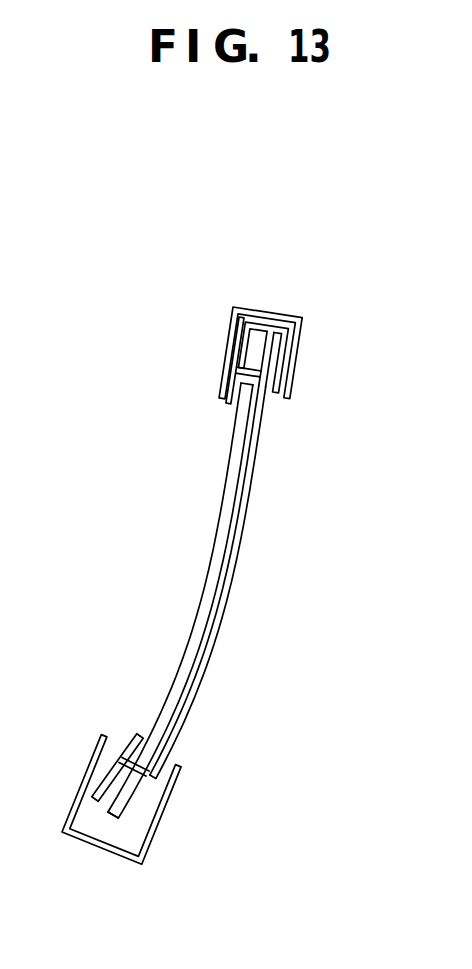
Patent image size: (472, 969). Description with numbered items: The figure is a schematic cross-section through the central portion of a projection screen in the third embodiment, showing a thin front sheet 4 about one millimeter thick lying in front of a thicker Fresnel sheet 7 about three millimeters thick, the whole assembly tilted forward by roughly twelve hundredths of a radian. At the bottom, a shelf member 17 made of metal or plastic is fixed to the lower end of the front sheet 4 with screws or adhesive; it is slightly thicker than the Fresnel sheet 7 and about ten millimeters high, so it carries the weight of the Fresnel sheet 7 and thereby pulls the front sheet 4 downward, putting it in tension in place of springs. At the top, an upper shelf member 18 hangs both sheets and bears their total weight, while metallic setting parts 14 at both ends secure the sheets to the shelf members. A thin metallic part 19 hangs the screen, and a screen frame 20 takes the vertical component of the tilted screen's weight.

The front sheet 4 is at (249, 495).
The Fresnel sheet 7 is at (216, 535).
The metallic setting parts 14 is at (235, 351).
The shelf member 17 is at (102, 818).
The upper shelf member 18 is at (266, 333).
The metallic part 19 is at (301, 327).
The screen frame 20 is at (162, 821).